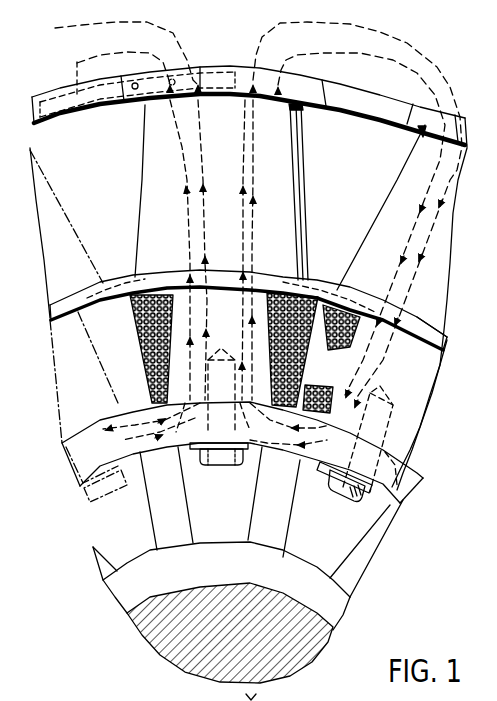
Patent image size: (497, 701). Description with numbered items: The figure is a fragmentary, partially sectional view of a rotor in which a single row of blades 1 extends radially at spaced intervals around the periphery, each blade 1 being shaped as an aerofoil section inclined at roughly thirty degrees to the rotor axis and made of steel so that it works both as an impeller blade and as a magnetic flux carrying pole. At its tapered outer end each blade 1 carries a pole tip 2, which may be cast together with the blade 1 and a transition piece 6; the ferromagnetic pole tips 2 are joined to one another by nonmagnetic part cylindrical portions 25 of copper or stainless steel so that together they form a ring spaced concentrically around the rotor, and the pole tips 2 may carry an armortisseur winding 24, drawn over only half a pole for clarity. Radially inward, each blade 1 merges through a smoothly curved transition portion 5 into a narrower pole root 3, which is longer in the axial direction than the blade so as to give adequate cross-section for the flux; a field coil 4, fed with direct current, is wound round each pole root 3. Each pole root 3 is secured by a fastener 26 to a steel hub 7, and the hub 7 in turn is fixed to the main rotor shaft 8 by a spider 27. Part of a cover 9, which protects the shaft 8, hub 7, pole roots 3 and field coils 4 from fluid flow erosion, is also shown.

The blade 1 is at (230, 151).
The pole tip 2 is at (252, 85).
The pole root 3 is at (286, 420).
The field coil 4 is at (229, 353).
The transition portion 5 is at (248, 287).
The transition piece 6 is at (120, 189).
The hub 7 is at (224, 452).
The main rotor shaft 8 is at (236, 633).
The cover 9 is at (453, 329).
The armortisseur winding 24 is at (108, 67).
The nonmagnetic part cylindrical portion 25 is at (258, 210).
The fastener 26 is at (281, 490).
The spider 27 is at (258, 538).